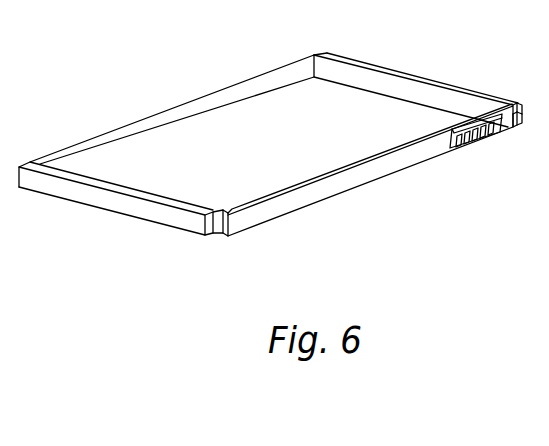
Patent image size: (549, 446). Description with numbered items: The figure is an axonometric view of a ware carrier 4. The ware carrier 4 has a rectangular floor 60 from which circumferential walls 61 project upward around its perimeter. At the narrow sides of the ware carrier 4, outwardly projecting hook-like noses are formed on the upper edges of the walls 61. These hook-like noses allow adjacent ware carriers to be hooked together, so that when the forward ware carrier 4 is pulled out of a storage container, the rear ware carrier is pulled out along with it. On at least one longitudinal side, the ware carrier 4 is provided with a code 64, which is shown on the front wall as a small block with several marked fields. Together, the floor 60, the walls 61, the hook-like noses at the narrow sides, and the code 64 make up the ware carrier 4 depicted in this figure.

The ware carrier 4 is at (202, 90).
The rectangular floor 60 is at (345, 127).
The circumferential walls 61 is at (397, 160).
The code 64 is at (472, 146).